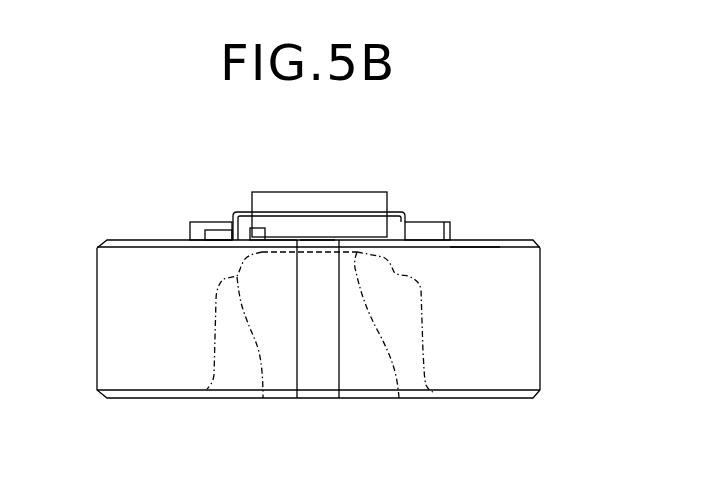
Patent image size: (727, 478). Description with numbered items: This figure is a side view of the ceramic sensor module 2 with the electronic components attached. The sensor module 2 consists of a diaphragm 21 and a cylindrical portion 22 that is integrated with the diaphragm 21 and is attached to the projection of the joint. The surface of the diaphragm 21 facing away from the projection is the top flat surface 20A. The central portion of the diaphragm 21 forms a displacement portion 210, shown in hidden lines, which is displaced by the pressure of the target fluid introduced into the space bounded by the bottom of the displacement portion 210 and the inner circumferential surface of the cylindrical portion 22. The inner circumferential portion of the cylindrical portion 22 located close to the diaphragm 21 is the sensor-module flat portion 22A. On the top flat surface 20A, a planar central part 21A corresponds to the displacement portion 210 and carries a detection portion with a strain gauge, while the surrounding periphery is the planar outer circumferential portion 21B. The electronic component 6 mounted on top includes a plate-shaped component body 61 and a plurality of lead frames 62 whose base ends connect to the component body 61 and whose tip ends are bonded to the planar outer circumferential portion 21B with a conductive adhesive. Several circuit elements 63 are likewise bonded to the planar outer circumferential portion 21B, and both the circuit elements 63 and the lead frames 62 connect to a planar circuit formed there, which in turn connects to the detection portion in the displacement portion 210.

The sensor module 2 is at (520, 171).
The electronic component 6 is at (268, 142).
The component body 61 is at (266, 197).
The lead frames 62 is at (232, 213).
The circuit elements 63 is at (197, 232).
The top flat surface 20A is at (278, 238).
The diaphragm 21 is at (468, 240).
The planar central part 21A is at (320, 240).
The planar outer circumferential portion 21B is at (482, 246).
The cylindrical portion 22 is at (528, 348).
The sensor-module flat portion 22A is at (263, 398).
The displacement portion 210 is at (399, 398).